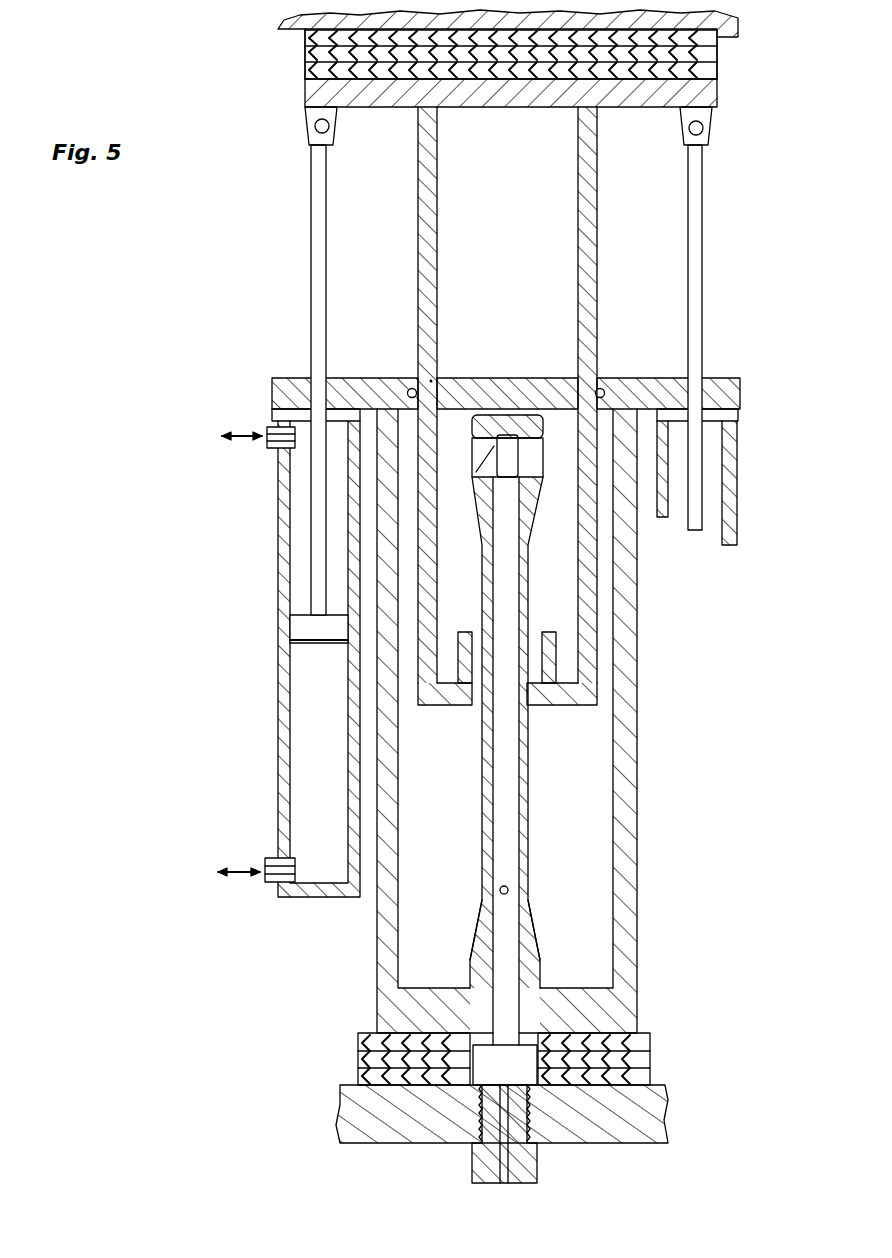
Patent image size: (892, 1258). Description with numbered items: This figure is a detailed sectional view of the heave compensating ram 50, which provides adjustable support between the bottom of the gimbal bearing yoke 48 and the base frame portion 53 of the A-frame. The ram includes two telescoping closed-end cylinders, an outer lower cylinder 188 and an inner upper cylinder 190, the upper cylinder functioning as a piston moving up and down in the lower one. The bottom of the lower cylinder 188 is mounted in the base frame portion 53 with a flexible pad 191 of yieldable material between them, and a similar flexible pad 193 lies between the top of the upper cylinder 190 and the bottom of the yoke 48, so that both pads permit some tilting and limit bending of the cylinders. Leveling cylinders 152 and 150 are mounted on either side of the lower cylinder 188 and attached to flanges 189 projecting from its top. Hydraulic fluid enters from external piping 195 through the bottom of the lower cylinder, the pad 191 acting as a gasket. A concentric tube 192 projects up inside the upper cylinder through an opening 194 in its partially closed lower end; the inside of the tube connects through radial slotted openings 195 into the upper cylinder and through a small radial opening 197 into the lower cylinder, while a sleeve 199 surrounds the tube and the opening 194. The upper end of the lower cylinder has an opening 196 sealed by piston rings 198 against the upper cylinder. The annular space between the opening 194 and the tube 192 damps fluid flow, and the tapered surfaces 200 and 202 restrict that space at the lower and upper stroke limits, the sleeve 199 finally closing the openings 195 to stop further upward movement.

The gimbal bearing yoke 48 is at (727, 35).
The flexible pad 193 is at (305, 65).
The flanges 189 is at (272, 384).
The piston rings 198 is at (424, 398).
The inner upper cylinder 190 is at (597, 268).
The opening 196 is at (430, 376).
The opening 194 is at (478, 704).
The outer lower cylinder 188 is at (637, 827).
The tube 192 is at (482, 816).
The enlarged tapered surface 200 is at (534, 926).
The tapered surface 202 is at (540, 516).
The sleeve 199 is at (555, 661).
The radial opening 197 is at (508, 889).
The leveling cylinders 152 is at (280, 594).
The right hydraulic cylinder 150 is at (740, 493).
The external piping 195 is at (510, 470).
The flexible pad 191 is at (340, 1103).
The base frame portion 53 is at (395, 1135).
The heave compensating ram 50 is at (498, 597).